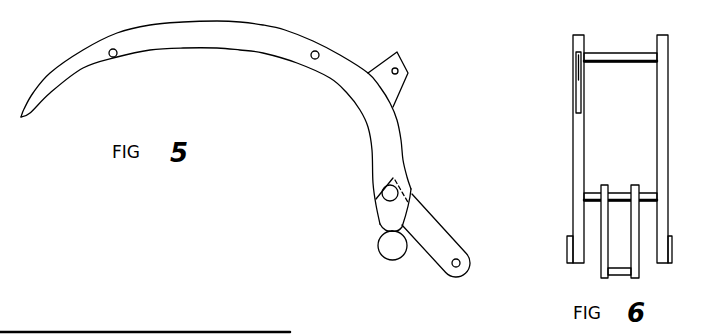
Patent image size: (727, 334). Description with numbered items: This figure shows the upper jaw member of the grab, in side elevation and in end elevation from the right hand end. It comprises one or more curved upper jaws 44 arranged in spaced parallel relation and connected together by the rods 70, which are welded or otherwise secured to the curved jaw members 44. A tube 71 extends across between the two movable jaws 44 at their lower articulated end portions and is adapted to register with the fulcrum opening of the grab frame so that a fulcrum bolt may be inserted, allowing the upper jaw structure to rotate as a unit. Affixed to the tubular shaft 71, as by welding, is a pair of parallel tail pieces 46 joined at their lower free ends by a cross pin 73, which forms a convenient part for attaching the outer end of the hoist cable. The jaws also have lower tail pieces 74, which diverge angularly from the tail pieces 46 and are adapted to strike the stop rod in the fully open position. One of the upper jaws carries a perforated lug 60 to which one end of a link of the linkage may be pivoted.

In FIG. 5, the upper jaws 44 is at (280, 45).
In FIG. 6, the upper jaws 44 is at (577, 168).
In FIG. 5, the tail pieces 46 is at (443, 247).
In FIG. 6, the tail pieces 46 is at (607, 260).
In FIG. 5, the perforated lug 60 is at (393, 80).
In FIG. 6, the perforated lug 60 is at (579, 91).
In FIG. 6, the rods 70 is at (612, 55).
In FIG. 6, the tube 71 is at (650, 200).
In FIG. 5, the cross pin 73 is at (457, 267).
In FIG. 6, the cross pin 73 is at (622, 270).
In FIG. 5, the tail pieces 74 is at (388, 222).